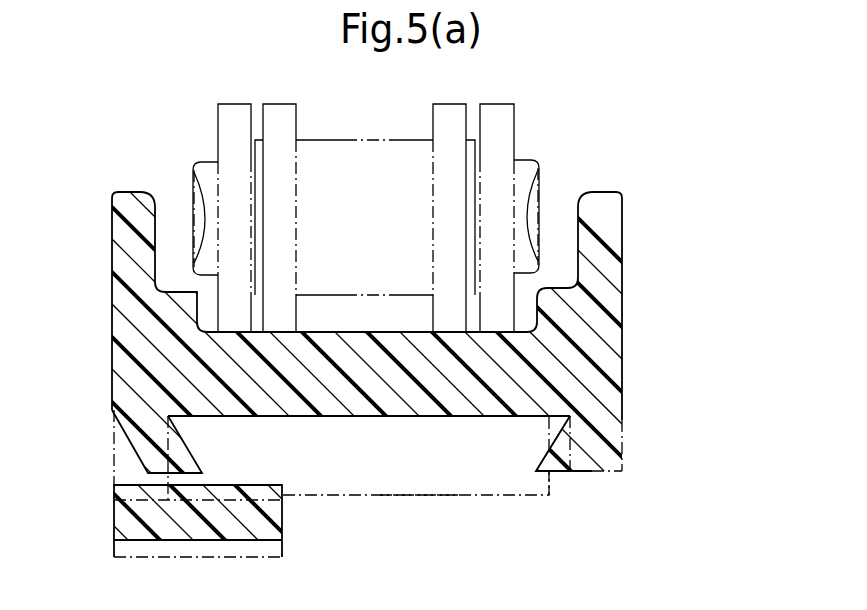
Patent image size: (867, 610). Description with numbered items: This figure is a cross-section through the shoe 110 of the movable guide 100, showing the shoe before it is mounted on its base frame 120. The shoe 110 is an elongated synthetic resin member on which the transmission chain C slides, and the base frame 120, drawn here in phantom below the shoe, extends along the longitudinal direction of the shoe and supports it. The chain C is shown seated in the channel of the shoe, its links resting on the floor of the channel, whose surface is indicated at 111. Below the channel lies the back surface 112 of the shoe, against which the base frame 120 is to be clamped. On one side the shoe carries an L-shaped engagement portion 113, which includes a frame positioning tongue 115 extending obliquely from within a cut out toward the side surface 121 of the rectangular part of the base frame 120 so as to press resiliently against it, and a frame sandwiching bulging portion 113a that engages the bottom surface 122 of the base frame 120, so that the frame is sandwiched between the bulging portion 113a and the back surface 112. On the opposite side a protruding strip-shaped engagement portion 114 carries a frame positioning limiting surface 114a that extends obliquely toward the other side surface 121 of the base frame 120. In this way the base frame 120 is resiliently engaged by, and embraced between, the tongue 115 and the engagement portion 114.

The movable guide 100 is at (706, 306).
The shoe 110 is at (583, 325).
The bottom surface of receiving cavity 111 is at (358, 333).
The back surface of the shoe 112 is at (337, 415).
The L-shaped engagement portion 113 is at (152, 518).
The frame sandwiching bulging portion 113a is at (121, 487).
The protruding strip-shaped engagement portion 114 is at (592, 444).
The frame positioning limiting surface 114a is at (543, 456).
The frame positioning tongue 115 is at (158, 440).
The base frame 120 is at (508, 482).
The side surface of the base frame 121 is at (553, 481).
The bottom surface of the base frame 122 is at (422, 493).
The transmission chain C is at (508, 122).